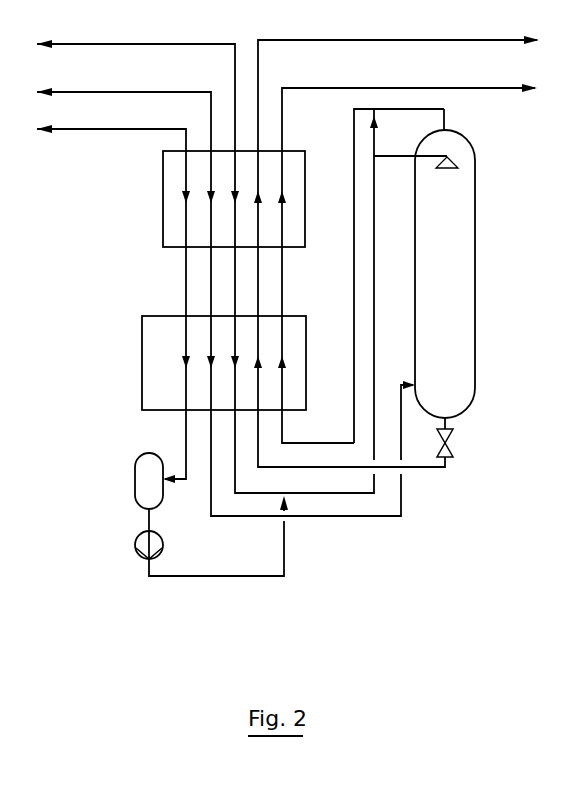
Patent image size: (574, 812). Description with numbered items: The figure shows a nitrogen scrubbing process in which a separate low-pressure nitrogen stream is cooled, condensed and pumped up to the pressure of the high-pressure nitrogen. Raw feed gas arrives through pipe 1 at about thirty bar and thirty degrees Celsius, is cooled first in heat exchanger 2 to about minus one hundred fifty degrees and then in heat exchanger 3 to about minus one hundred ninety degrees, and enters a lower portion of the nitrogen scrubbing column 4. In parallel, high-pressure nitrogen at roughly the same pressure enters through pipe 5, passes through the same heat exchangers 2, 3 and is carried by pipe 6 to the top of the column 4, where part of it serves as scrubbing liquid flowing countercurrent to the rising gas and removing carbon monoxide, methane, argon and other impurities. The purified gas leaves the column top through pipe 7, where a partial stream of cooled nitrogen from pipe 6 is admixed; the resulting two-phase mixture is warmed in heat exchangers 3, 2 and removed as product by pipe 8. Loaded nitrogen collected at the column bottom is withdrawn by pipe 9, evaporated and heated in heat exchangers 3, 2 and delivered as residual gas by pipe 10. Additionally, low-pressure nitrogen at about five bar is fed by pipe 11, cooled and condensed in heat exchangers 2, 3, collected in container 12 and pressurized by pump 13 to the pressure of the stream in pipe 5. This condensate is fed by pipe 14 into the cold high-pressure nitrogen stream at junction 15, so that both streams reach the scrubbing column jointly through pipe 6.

The pipe 1 is at (76, 92).
The heat exchanger 2 is at (163, 207).
The heat exchanger 3 is at (142, 366).
The nitrogen scrubbing column 4 is at (476, 263).
The pipe 5 is at (87, 44).
The pipe 6 is at (375, 265).
The pipe 7 is at (447, 122).
The pipe 8 is at (470, 88).
The pipe 9 is at (453, 464).
The pipe 10 is at (470, 40).
The pipe 11 is at (86, 129).
The container 12 is at (135, 483).
The pump 13 is at (133, 550).
The pipe 14 is at (285, 556).
The junction 15 is at (297, 480).